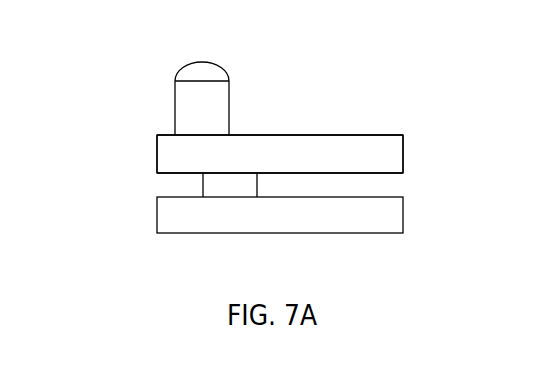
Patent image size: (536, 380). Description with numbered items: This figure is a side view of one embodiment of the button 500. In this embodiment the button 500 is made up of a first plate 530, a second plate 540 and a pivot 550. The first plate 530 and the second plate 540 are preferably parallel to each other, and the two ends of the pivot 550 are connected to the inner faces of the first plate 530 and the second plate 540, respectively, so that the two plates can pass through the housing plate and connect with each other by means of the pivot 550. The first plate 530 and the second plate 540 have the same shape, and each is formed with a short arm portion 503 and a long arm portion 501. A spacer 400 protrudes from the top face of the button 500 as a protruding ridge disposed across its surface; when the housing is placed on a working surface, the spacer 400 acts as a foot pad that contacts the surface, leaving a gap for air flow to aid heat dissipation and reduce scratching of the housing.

The button 500 is at (49, 38).
The spacer 400 is at (206, 93).
The first plate 530 is at (257, 147).
The long arm portion 501 is at (390, 157).
The short arm portion 503 is at (168, 152).
The pivot 550 is at (213, 184).
The second plate 540 is at (291, 223).